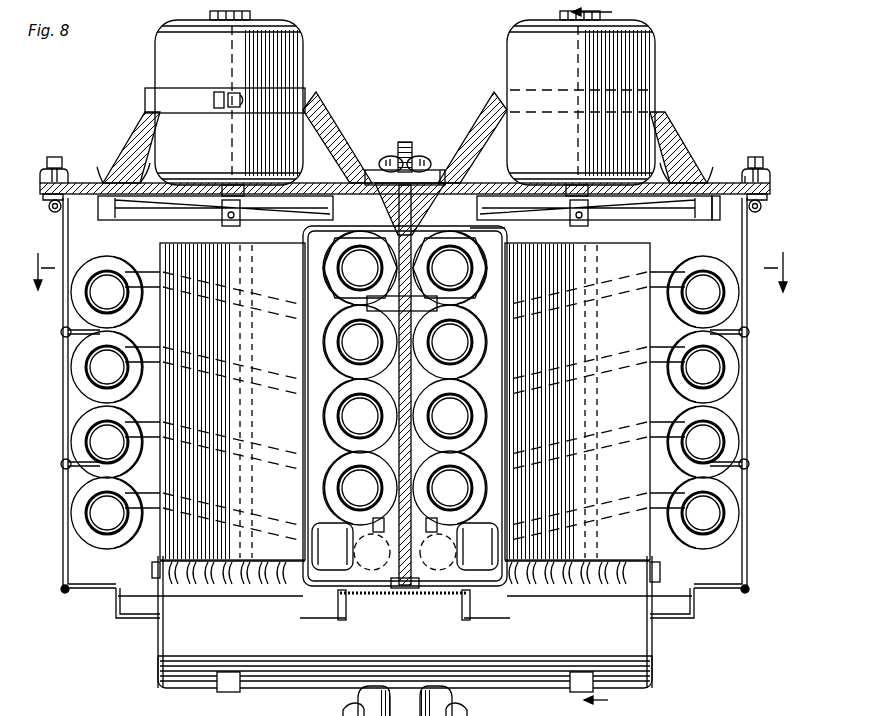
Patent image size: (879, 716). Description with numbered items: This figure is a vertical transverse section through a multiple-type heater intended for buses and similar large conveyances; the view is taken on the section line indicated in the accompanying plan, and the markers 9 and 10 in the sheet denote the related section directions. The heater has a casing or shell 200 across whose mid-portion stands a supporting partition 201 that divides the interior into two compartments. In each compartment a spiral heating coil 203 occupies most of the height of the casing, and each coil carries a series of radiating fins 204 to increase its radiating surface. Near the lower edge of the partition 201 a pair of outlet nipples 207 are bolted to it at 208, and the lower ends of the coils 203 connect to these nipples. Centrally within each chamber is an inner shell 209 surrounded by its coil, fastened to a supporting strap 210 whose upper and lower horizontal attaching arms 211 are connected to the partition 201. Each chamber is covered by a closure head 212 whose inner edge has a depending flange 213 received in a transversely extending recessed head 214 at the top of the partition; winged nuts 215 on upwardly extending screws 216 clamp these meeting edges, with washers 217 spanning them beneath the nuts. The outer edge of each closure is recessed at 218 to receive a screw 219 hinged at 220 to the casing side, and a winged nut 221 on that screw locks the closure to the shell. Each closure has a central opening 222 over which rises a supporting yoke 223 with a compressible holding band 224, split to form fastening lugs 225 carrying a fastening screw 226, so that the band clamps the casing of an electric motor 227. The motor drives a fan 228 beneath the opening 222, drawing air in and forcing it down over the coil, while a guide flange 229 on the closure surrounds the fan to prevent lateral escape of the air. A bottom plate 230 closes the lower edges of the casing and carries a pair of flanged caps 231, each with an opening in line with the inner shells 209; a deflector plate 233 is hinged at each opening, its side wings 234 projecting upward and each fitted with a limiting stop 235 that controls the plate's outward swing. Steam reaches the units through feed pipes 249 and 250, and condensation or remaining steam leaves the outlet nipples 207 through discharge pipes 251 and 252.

The section line 9- 9 is at (408, 272).
The direction arrow 10 is at (605, 356).
The casing or shell 200 is at (746, 549).
The supporting partition 201 is at (410, 590).
The spiral heating coil 203 is at (722, 380).
The radiating fins 204 is at (722, 402).
The outlet nipples 207 is at (331, 600).
The bolts 208 is at (371, 582).
The inner shell 209 is at (167, 398).
The supporting strap 210 is at (520, 230).
The attaching arms 211 is at (304, 232).
The closure head 212 is at (712, 184).
The depending flange 213 is at (409, 209).
The recessed head 214 is at (375, 171).
The winged nuts 215 is at (415, 156).
The screw 216 is at (402, 143).
The washers 217 is at (431, 182).
The recess 218 is at (41, 185).
The screw 219 is at (757, 162).
The hinge 220 is at (762, 211).
The winged nut 221 is at (765, 174).
The opening 222 is at (148, 184).
The supporting yoke 223 is at (322, 122).
The holding band 224 is at (302, 86).
The fastening lugs 225 is at (235, 109).
The fastening screw 226 is at (216, 96).
The electric motor 227 is at (155, 60).
The fan 228 is at (143, 212).
The guide flange 229 is at (719, 208).
The bottom plate 230 is at (720, 596).
The flanged caps 231 is at (115, 612).
The deflector plate 233 is at (160, 670).
The side wings 234 is at (158, 640).
The limiting stop 235 is at (662, 577).
The feed pipe 249 is at (348, 714).
The feed pipe 250 is at (466, 713).
The discharge pipe 251 is at (361, 694).
The discharge pipe 252 is at (452, 696).